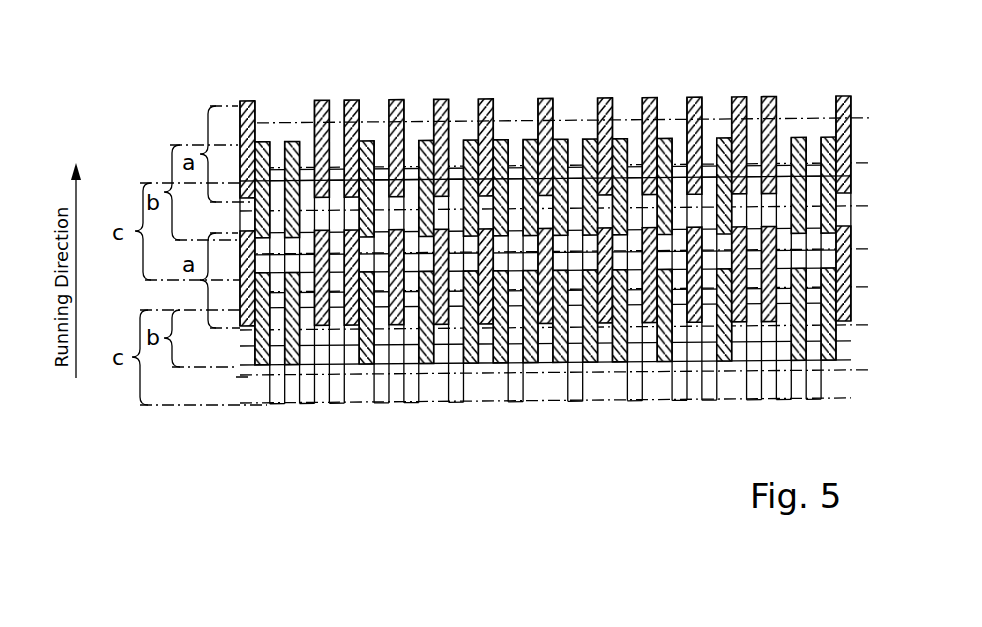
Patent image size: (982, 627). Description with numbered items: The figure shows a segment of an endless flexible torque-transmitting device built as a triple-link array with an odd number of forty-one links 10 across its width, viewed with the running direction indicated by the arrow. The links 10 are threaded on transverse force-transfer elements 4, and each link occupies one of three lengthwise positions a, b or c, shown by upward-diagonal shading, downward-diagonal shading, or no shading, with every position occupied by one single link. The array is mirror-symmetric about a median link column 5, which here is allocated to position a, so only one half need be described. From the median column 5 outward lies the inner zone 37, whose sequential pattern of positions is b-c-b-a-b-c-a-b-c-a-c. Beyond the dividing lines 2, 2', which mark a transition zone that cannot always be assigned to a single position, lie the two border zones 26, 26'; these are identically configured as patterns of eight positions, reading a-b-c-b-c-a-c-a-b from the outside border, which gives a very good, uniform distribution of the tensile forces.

The border zone 26 is at (286, 208).
The dividing line 2 is at (379, 221).
The link 10 is at (513, 188).
The inner zone 37 is at (546, 84).
The force-transfer element 4 is at (614, 120).
The dividing line 2' is at (714, 217).
The border zone 26' is at (833, 200).
The median link column 5 is at (542, 385).